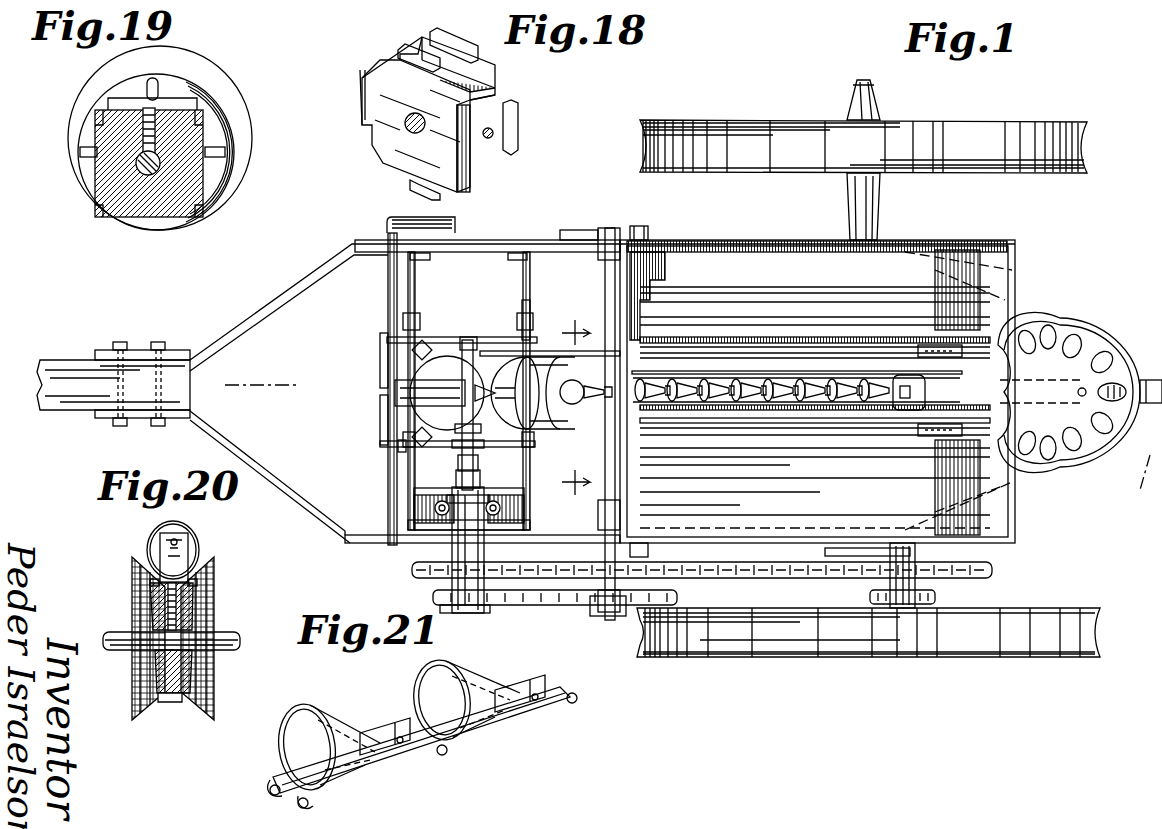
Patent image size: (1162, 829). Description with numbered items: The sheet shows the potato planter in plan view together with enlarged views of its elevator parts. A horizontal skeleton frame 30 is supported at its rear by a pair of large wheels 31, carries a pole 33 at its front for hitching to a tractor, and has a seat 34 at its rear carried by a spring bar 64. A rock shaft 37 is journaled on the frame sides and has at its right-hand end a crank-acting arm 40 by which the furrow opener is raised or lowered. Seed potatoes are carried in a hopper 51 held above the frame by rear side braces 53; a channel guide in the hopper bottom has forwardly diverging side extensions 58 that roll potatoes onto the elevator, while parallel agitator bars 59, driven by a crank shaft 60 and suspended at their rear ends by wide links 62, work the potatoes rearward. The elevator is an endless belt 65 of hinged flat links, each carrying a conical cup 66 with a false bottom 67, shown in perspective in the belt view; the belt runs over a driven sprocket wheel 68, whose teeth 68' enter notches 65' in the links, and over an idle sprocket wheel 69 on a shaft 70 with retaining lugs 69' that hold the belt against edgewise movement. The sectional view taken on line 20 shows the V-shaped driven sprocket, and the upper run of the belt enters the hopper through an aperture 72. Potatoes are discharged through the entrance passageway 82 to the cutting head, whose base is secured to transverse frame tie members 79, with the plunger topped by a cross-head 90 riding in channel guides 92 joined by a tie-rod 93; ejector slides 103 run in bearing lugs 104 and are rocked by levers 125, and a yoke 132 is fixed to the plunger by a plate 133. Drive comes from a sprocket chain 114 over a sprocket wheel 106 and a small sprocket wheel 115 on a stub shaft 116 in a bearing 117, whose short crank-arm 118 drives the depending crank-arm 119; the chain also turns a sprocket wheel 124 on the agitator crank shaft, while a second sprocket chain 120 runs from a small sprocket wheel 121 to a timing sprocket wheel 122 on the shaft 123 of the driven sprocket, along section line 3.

In FIG. 1, the section line 3 is at (682, 433).
In FIG. 1, the section line 20 is at (576, 408).
In FIG. 1, the horizontal skeleton frame 30 is at (272, 303).
In FIG. 1, the wheels 31 is at (744, 126).
In FIG. 1, the pole 33 is at (62, 362).
In FIG. 1, the seat 34 is at (1065, 320).
In FIG. 1, the rock shaft 37 is at (388, 283).
In FIG. 1, the crank-acting arm 40 is at (450, 220).
In FIG. 1, the hopper 51 is at (735, 245).
In FIG. 1, the rear side braces 53 is at (1020, 268).
In FIG. 1, the side extensions 58 is at (800, 372).
In FIG. 1, the agitator bars 59 is at (672, 332).
In FIG. 1, the crank shaft 60 is at (638, 230).
In FIG. 1, the wide links 62 is at (940, 350).
In FIG. 1, the spring bar 64 is at (1148, 380).
In FIG. 1, the endless belt 65 is at (724, 339).
In FIG. 20, the endless belt 65 is at (141, 638).
In FIG. 21, the endless belt 65 is at (421, 718).
In FIG. 21, the notches 65' is at (422, 750).
In FIG. 1, the conical cup 66 is at (775, 384).
In FIG. 20, the conical cup 66 is at (210, 540).
In FIG. 21, the conical cup 66 is at (340, 735).
In FIG. 20, the false bottom 67 is at (170, 550).
In FIG. 21, the false bottom 67 is at (280, 750).
In FIG. 19, the driven sprocket wheel 68 is at (190, 152).
In FIG. 1, the driven sprocket wheel 68 is at (550, 343).
In FIG. 20, the driven sprocket wheel 68 is at (202, 635).
In FIG. 19, the teeth 68' is at (162, 124).
In FIG. 20, the teeth 68' is at (186, 666).
In FIG. 18, the idle sprocket wheel 69 is at (416, 114).
In FIG. 18, the retaining lugs 69' is at (446, 105).
In FIG. 18, the shaft 70 is at (425, 130).
In FIG. 1, the aperture 72 is at (928, 392).
In FIG. 1, the transverse frame tie members 79 is at (520, 264).
In FIG. 1, the entrance passageway 82 is at (560, 425).
In FIG. 1, the cross-head 90 is at (500, 394).
In FIG. 1, the channel guides 92 is at (478, 336).
In FIG. 1, the tie-rod 93 is at (524, 393).
In FIG. 1, the reciprocating slide 103 is at (425, 350).
In FIG. 1, the bearing lugs 104 is at (450, 372).
In FIG. 1, the sprocket wheel 106 is at (960, 572).
In FIG. 1, the sprocket chain 114 is at (780, 580).
In FIG. 1, the small sprocket wheel 115 is at (412, 570).
In FIG. 1, the stub shaft 116 is at (486, 560).
In FIG. 1, the bearing 117 is at (484, 500).
In FIG. 1, the short crank-arm 118 is at (456, 480).
In FIG. 1, the depending crank-arm 119 is at (480, 460).
In FIG. 1, the sprocket chain 120 is at (520, 605).
In FIG. 1, the small sprocket wheel 121 is at (472, 606).
In FIG. 1, the timing sprocket wheel 122 is at (608, 616).
In FIG. 19, the shaft 123 is at (118, 217).
In FIG. 1, the shaft 123 is at (604, 240).
In FIG. 20, the shaft 123 is at (215, 640).
In FIG. 1, the sprocket wheel 124 is at (680, 548).
In FIG. 1, the levers 125 is at (523, 333).
In FIG. 1, the yoke 132 is at (380, 348).
In FIG. 1, the plate 133 is at (382, 403).